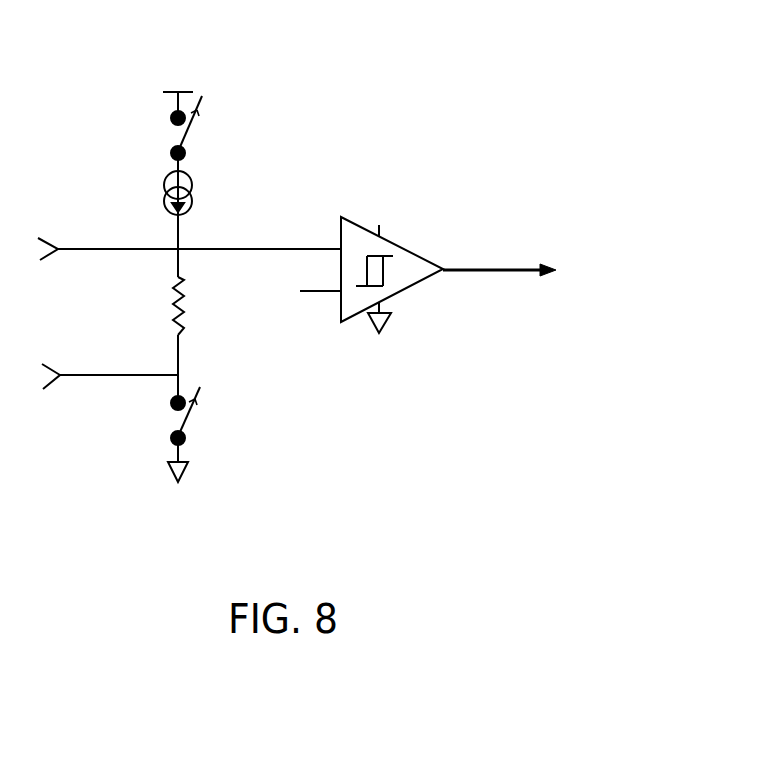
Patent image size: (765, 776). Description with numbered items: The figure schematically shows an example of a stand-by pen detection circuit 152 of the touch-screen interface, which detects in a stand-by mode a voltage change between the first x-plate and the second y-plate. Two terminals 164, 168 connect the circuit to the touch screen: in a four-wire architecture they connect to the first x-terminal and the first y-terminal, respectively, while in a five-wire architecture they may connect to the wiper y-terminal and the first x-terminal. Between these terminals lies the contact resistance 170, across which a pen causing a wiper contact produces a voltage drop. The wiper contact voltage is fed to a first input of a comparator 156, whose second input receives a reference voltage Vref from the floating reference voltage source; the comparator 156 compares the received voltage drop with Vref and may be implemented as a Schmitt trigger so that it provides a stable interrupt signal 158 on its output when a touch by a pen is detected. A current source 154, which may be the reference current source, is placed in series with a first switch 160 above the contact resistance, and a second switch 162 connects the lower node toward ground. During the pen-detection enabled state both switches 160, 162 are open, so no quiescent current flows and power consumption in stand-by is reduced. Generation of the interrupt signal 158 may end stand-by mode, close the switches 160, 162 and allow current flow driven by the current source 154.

The stand-by pen detection circuit 152 is at (338, 40).
The current source 154 is at (191, 200).
The comparator 156 is at (394, 182).
The interrupt signal 158 is at (528, 270).
The switch 160 is at (202, 96).
The switch 162 is at (200, 387).
The terminal 164 is at (43, 238).
The terminal 168 is at (46, 364).
The contact resistance 170 is at (181, 278).